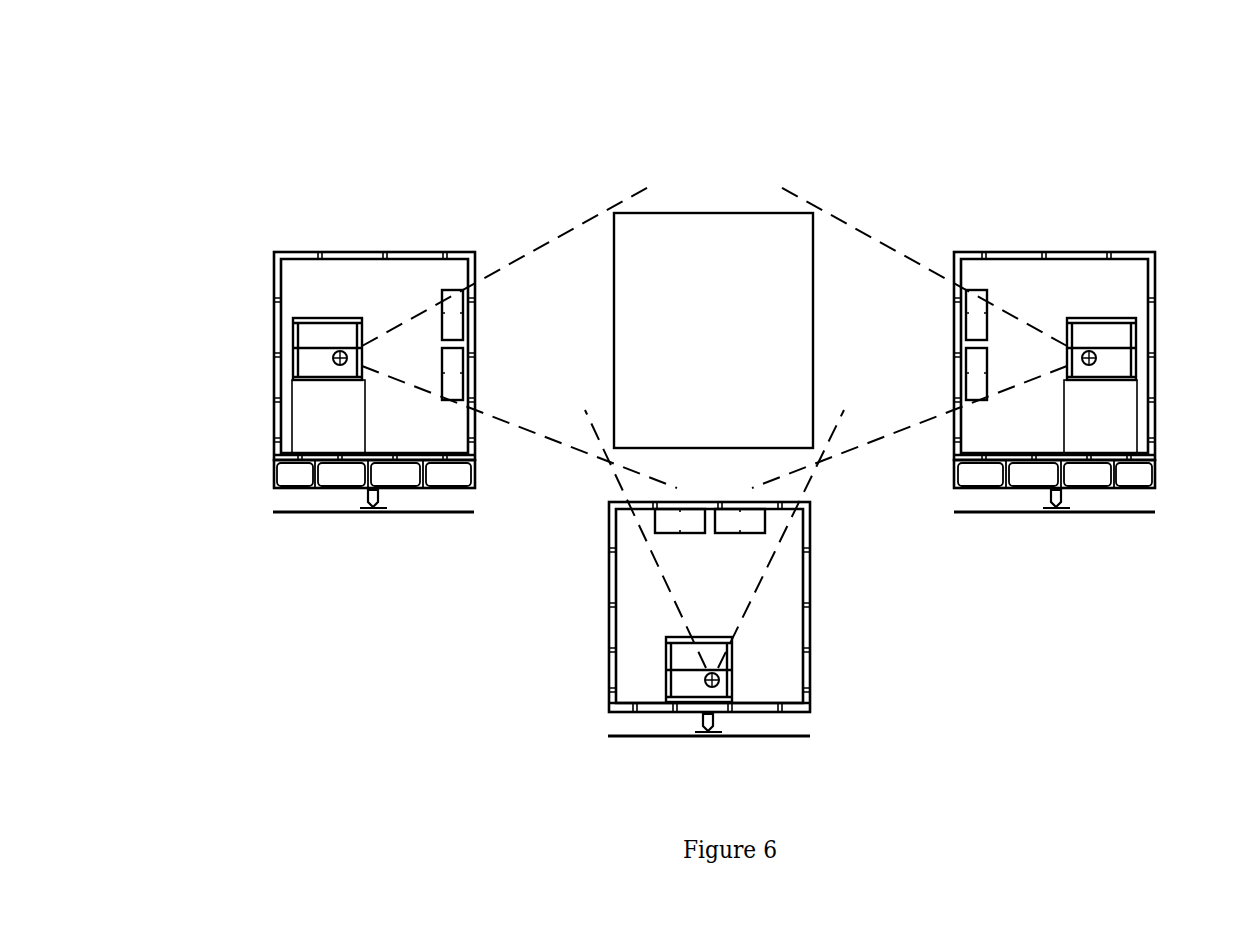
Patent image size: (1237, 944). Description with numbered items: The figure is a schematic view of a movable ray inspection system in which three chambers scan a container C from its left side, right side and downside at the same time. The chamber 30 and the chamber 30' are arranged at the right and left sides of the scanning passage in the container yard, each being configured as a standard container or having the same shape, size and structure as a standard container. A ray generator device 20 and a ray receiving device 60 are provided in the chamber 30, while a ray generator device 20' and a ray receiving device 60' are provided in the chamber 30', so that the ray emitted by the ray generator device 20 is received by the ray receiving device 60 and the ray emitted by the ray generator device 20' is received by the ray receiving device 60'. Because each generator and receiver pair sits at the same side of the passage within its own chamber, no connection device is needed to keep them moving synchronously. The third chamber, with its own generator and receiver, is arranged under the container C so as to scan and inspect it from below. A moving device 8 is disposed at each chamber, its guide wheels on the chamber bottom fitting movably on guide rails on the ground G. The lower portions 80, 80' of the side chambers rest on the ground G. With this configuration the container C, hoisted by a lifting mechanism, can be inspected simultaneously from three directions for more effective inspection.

The chamber 30 is at (368, 297).
The chamber 30' is at (1055, 292).
The ray generator device 20 is at (272, 386).
The ray generator device 20' is at (1134, 371).
The ray receiving device 60 is at (423, 267).
The ray receiving device 60' is at (955, 273).
The base / ballast blocks 80 is at (343, 484).
The base / ballast blocks 80' is at (1089, 488).
The moving device 8 is at (363, 500).
The container C is at (695, 233).
The ground G is at (1128, 513).